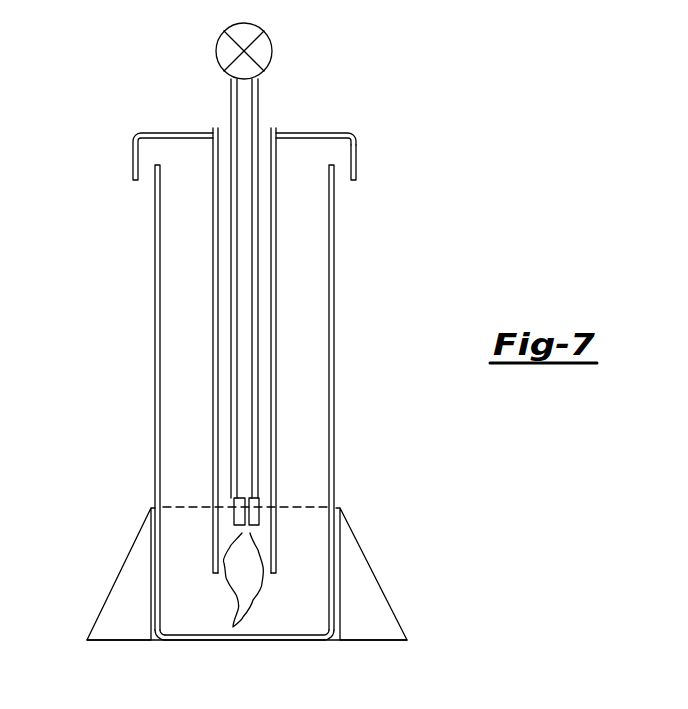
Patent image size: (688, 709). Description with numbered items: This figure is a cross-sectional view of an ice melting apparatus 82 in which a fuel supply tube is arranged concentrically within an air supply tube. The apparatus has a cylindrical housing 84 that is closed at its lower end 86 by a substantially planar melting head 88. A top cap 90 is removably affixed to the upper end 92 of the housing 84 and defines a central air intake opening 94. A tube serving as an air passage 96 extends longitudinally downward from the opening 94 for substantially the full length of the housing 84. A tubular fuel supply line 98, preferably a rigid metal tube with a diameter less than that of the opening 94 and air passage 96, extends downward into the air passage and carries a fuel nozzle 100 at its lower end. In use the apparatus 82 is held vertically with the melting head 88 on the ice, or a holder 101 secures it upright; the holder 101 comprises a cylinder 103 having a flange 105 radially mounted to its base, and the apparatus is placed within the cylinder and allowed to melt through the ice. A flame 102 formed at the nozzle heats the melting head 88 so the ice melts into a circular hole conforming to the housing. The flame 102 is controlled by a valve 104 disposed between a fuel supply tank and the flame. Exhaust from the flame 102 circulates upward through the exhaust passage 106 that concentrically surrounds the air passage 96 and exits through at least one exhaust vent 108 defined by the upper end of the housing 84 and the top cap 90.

The ice melting apparatus 82 is at (349, 264).
The housing 84 is at (336, 298).
The lower end 86 is at (172, 619).
The melting head 88 is at (278, 641).
The top cap 90 is at (355, 132).
The upper end 92 is at (156, 196).
The central air intake opening 94 is at (265, 119).
The air passage 96 is at (266, 371).
The fuel supply line 98 is at (244, 339).
The fuel nozzle 100 is at (232, 512).
The holder 101 is at (361, 525).
The flame 102 is at (263, 587).
The cylinder 103 is at (151, 509).
The valve 104 is at (277, 43).
The flange 105 is at (111, 620).
The exhaust passage 106 is at (306, 505).
The exhaust vent 108 is at (340, 186).